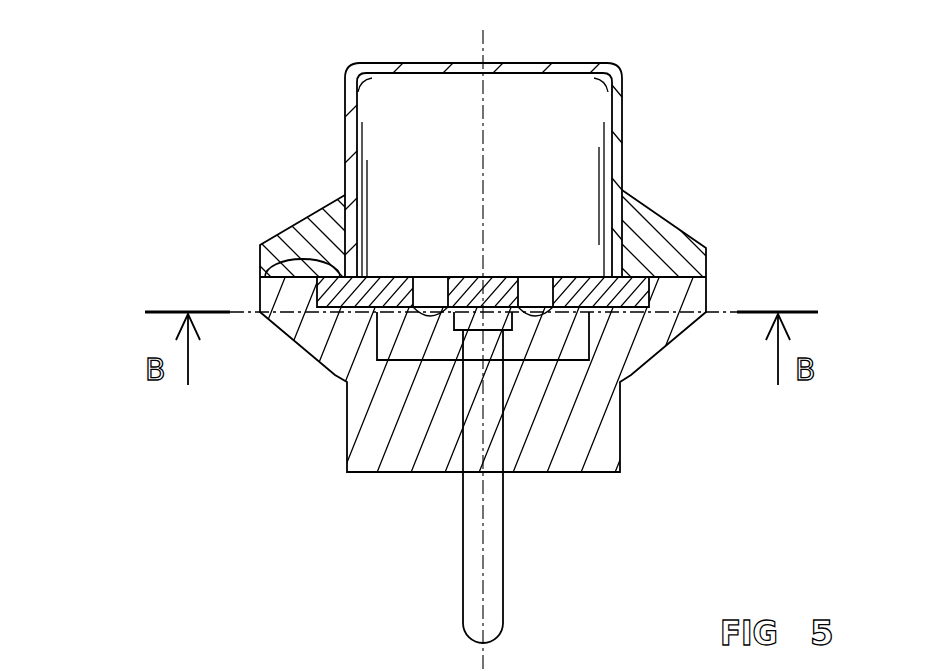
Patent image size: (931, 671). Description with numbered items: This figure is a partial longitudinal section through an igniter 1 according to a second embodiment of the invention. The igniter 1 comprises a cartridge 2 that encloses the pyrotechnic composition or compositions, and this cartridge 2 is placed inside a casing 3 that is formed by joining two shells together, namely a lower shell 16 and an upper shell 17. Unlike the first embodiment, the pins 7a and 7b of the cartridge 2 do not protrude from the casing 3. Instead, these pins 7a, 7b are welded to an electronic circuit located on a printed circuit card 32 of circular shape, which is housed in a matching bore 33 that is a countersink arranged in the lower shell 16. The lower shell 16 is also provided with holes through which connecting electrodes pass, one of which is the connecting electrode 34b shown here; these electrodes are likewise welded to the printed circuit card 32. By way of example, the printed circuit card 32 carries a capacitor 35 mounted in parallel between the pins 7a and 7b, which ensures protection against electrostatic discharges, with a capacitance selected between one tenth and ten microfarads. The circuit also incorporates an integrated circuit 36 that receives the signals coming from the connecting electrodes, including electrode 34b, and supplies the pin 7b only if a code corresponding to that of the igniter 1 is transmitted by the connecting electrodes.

The igniter 1 is at (668, 110).
The cartridge 2 is at (520, 120).
The casing 3 is at (337, 172).
The pin 7a is at (433, 295).
The pin 7b is at (536, 297).
The lower shell 16 is at (612, 355).
The shell 17 is at (630, 233).
The printed circuit card 32 is at (353, 268).
The bore 33 is at (266, 279).
The connecting electrode 34b is at (473, 588).
The capacitor 35 is at (470, 318).
The integrated circuit 36 is at (545, 320).